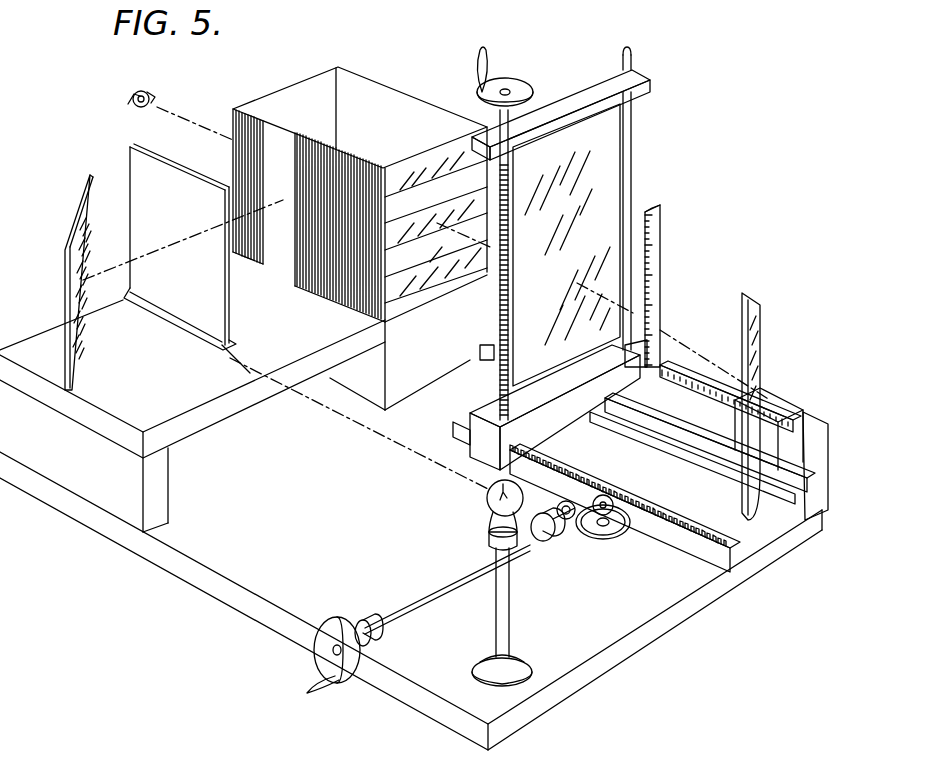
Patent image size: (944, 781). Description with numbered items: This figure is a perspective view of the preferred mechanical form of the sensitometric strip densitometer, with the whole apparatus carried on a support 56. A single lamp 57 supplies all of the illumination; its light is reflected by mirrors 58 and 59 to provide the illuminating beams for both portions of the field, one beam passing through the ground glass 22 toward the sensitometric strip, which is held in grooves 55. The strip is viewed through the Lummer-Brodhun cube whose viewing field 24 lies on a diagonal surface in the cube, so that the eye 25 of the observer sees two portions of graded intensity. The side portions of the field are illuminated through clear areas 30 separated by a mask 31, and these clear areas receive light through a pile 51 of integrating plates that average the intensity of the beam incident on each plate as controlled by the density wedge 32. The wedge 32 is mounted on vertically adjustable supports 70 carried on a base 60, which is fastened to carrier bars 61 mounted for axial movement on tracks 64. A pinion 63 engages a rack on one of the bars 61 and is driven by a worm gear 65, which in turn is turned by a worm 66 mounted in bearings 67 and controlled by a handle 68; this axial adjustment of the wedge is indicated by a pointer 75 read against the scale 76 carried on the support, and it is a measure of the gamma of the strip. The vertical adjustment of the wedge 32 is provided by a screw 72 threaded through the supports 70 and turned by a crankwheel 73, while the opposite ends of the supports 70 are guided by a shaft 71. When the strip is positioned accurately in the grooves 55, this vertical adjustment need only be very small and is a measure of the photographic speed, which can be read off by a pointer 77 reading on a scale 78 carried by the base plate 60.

The ground glass 22 is at (135, 178).
The viewing field 24 is at (333, 93).
The eye 25 is at (130, 99).
The clear areas 30 is at (357, 137).
The mask 31 is at (388, 127).
The density wedge 32 is at (600, 137).
The pile of integrating plates 51 is at (438, 118).
The grooves 55 is at (292, 286).
The support 56 is at (273, 595).
The lamp 57 is at (490, 502).
The mirror 58 is at (78, 217).
The mirror 59 is at (758, 330).
The base 60 is at (590, 410).
The carrier bars 61 is at (660, 422).
The pinion 63 is at (615, 500).
The tracks 64 is at (790, 507).
The worm gear 65 is at (610, 535).
The worm 66 is at (570, 520).
The bearings 67 is at (550, 537).
The handle 68 is at (323, 657).
The vertically adjustable supports 70 is at (580, 93).
The shaft 71 is at (623, 180).
The screw 72 is at (497, 377).
The crankwheel 73 is at (520, 87).
The pointer 75 is at (683, 365).
The scale 76 is at (708, 400).
The pointer 77 is at (645, 353).
The scale 78 is at (660, 237).